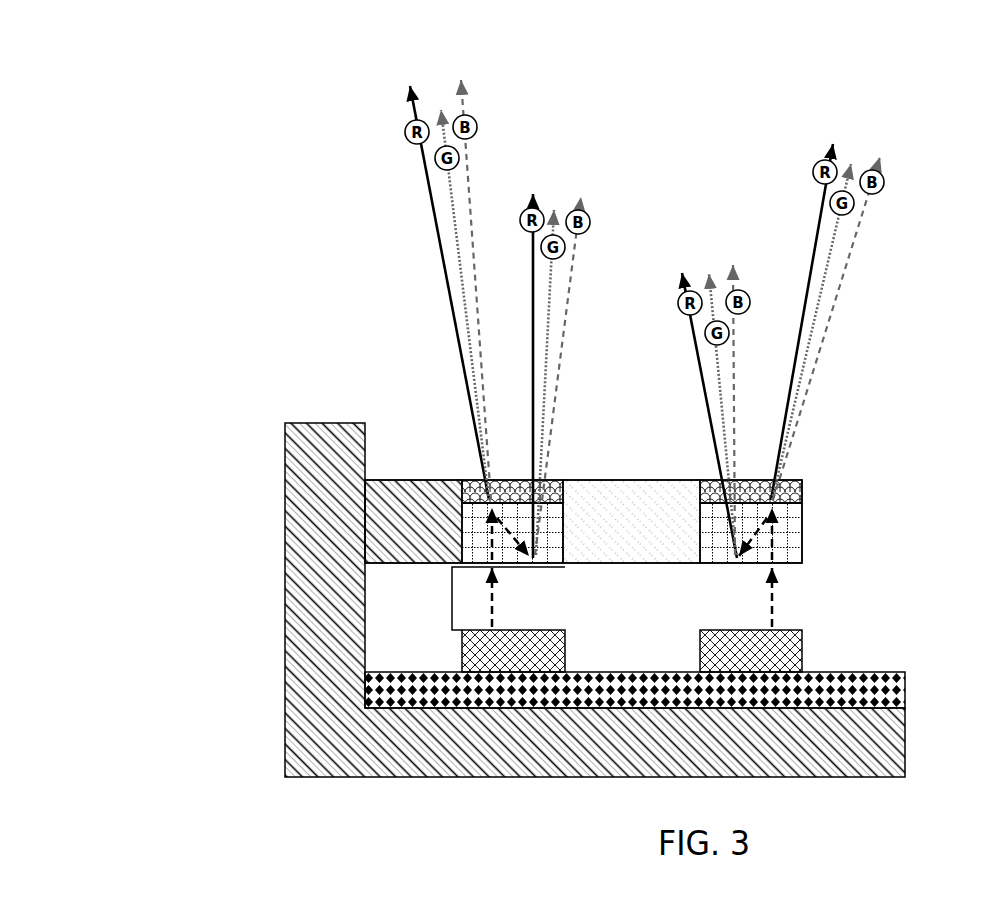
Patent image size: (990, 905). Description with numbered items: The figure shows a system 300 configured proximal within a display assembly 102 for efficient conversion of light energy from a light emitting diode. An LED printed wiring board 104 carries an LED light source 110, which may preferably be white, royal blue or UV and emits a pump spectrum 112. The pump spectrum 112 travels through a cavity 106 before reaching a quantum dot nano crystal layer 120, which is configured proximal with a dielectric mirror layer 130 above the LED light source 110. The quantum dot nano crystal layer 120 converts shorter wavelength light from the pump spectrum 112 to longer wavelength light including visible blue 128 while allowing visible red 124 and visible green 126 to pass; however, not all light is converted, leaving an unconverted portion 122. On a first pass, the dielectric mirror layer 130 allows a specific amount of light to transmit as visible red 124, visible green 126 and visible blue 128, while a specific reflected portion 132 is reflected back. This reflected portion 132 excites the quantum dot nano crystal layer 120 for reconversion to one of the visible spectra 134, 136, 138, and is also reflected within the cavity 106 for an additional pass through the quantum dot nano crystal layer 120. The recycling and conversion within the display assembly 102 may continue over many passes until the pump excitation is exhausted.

The system 300 is at (146, 124).
The display assembly 102 is at (285, 518).
The LED printed wiring board 104 is at (905, 695).
The cavity 106 is at (452, 598).
The LED light source 110 is at (565, 660).
The pump spectrum 112 is at (509, 601).
The quantum dot nano crystal layer 120 is at (565, 555).
The unconverted portion of light 122 is at (783, 534).
The visible red 124 is at (394, 96).
The visible green 126 is at (430, 80).
The visible blue 128 is at (453, 71).
The dielectric mirror layer 130 is at (694, 491).
The reflected portion 132 is at (757, 541).
The visible spectrum 134 is at (536, 164).
The visible spectrum 136 is at (558, 170).
The visible spectrum 138 is at (583, 170).